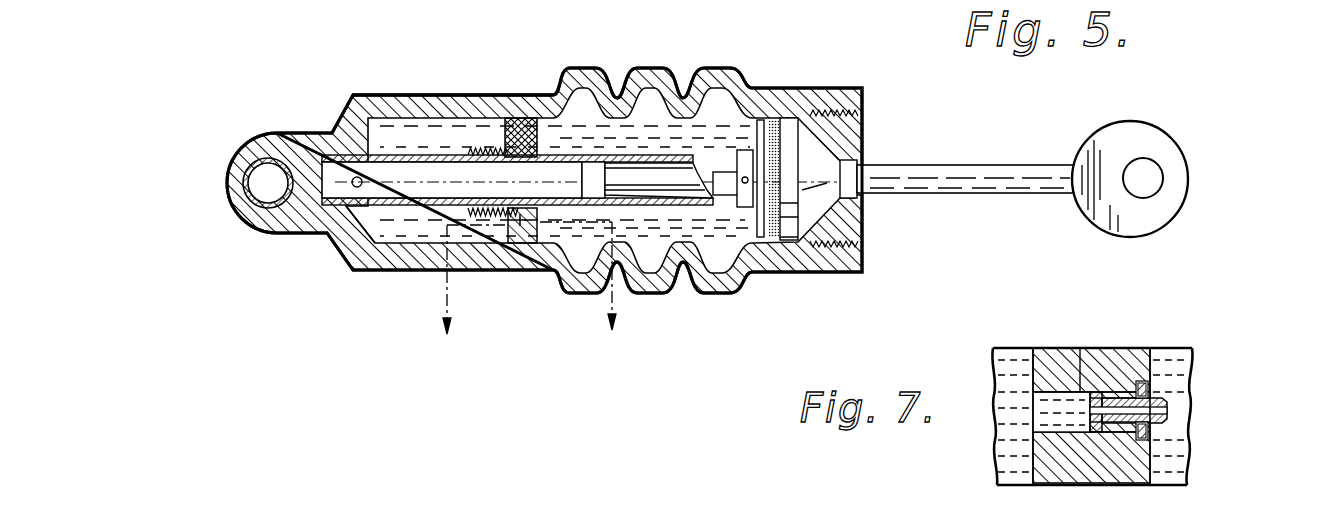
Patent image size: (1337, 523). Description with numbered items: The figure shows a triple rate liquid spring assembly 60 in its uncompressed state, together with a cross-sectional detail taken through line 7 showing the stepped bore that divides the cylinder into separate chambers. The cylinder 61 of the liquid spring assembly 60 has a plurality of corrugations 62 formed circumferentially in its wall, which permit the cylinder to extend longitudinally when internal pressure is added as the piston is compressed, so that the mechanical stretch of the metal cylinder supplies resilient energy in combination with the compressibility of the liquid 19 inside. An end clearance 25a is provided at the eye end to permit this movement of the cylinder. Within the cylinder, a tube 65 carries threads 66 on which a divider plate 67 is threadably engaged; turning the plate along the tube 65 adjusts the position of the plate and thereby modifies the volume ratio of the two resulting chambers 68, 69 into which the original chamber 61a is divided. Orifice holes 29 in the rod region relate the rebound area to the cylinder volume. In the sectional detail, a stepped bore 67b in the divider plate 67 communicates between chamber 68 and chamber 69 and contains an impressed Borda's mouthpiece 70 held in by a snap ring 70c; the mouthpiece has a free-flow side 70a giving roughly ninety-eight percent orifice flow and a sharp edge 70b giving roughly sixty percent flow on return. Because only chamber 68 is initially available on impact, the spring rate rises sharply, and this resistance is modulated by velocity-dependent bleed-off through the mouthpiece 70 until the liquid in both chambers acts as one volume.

In FIG. 5, the liquid spring assembly 60 is at (822, 22).
In FIG. 5, the cylinder 61 is at (398, 95).
In FIG. 5, the chamber 61a is at (513, 97).
In FIG. 7, the chamber 61a is at (1170, 463).
In FIG. 5, the corrugations 62 is at (717, 63).
In FIG. 5, the tube 65 is at (448, 160).
In FIG. 5, the threads 66 is at (493, 137).
In FIG. 5, the divider plate 67 is at (540, 120).
In FIG. 7, the divider plate 67 is at (1048, 355).
In FIG. 7, the stepped bore 67b is at (1073, 392).
In FIG. 5, the chamber 68 is at (352, 240).
In FIG. 7, the chamber 68 is at (1000, 363).
In FIG. 5, the chamber 69 is at (708, 228).
In FIG. 7, the chamber 69 is at (1190, 352).
In FIG. 5, the Borda's mouthpiece 70 is at (508, 228).
In FIG. 7, the Borda's mouthpiece 70 is at (1185, 388).
In FIG. 7, the free-flow orifice 70a is at (1077, 412).
In FIG. 7, the sharp edge 70b is at (1170, 412).
In FIG. 7, the snap ring 70c is at (1187, 435).
In FIG. 5, the orifice holes 29 is at (360, 186).
In FIG. 5, the end clearance 25a is at (277, 232).
In FIG. 5, the liquid 19 is at (373, 270).
In FIG. 5, the section line 7— 7 is at (527, 292).